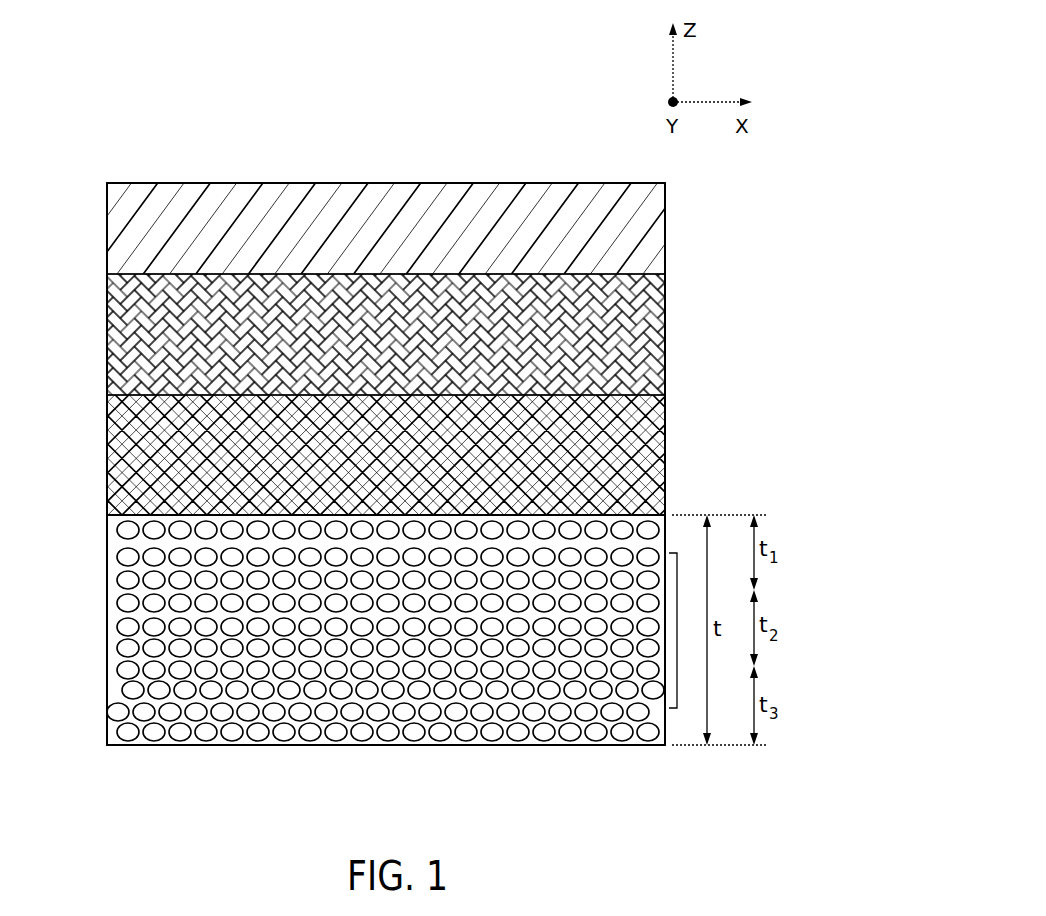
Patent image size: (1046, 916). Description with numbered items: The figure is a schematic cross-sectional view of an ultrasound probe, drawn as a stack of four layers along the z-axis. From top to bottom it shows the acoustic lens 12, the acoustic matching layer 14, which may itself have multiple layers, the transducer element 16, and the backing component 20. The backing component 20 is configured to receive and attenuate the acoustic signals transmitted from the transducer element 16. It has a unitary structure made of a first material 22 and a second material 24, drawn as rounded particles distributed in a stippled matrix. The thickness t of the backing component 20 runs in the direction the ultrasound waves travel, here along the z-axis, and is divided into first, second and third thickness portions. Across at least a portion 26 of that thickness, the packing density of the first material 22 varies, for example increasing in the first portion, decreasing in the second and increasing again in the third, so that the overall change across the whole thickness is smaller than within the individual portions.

The acoustic lens 12 is at (107, 230).
The acoustic matching layer 14 is at (107, 332).
The transducer element 16 is at (107, 445).
The backing component 20 is at (354, 630).
The first material 22 is at (107, 676).
The second material 24 is at (409, 747).
The portion 26 is at (678, 618).